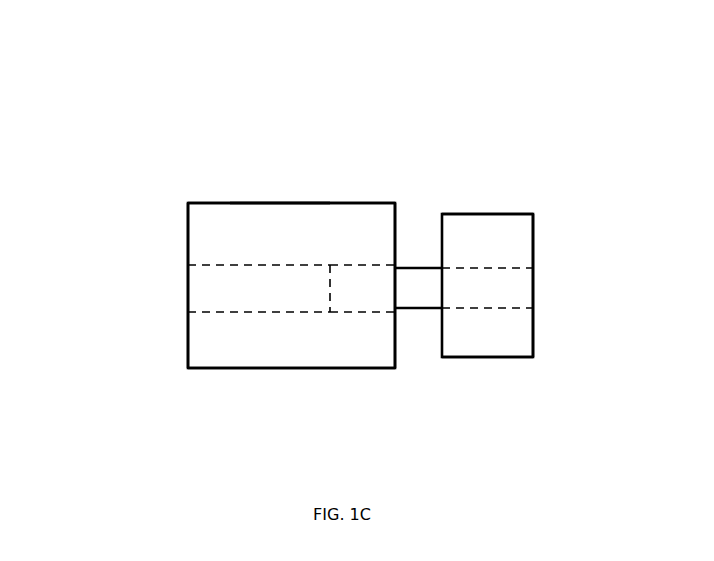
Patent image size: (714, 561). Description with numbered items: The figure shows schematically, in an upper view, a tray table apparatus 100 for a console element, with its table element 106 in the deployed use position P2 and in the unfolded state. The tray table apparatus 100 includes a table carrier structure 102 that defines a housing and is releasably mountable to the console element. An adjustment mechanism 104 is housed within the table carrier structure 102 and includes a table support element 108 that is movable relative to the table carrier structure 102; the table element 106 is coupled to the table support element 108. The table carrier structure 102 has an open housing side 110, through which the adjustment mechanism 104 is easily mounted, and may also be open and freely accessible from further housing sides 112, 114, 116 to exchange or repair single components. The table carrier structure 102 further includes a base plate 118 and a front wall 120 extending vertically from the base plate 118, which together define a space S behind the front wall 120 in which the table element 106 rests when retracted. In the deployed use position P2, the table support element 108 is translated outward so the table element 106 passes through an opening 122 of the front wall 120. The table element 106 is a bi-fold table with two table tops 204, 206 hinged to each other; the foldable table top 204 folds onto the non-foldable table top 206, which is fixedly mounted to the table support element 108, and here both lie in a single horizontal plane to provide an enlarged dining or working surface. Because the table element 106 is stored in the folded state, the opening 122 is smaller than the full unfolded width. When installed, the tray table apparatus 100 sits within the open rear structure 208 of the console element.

The tray table apparatus 100 is at (221, 68).
The table carrier structure 102 is at (186, 176).
The adjustment mechanism 104 is at (168, 272).
The table element 106 is at (534, 358).
The table support element 108 is at (423, 305).
The open housing side 110 is at (218, 225).
The housing side 112 is at (218, 371).
The housing side 114 is at (186, 338).
The housing side 116 is at (276, 202).
The base plate 118 is at (307, 217).
The front wall 120 is at (397, 214).
The opening 122 is at (397, 265).
The table top 204 is at (519, 257).
The table top 206 is at (519, 323).
The open rear structure 208 is at (485, 268).
The space S is at (336, 224).
The deployed use position P2 is at (500, 343).